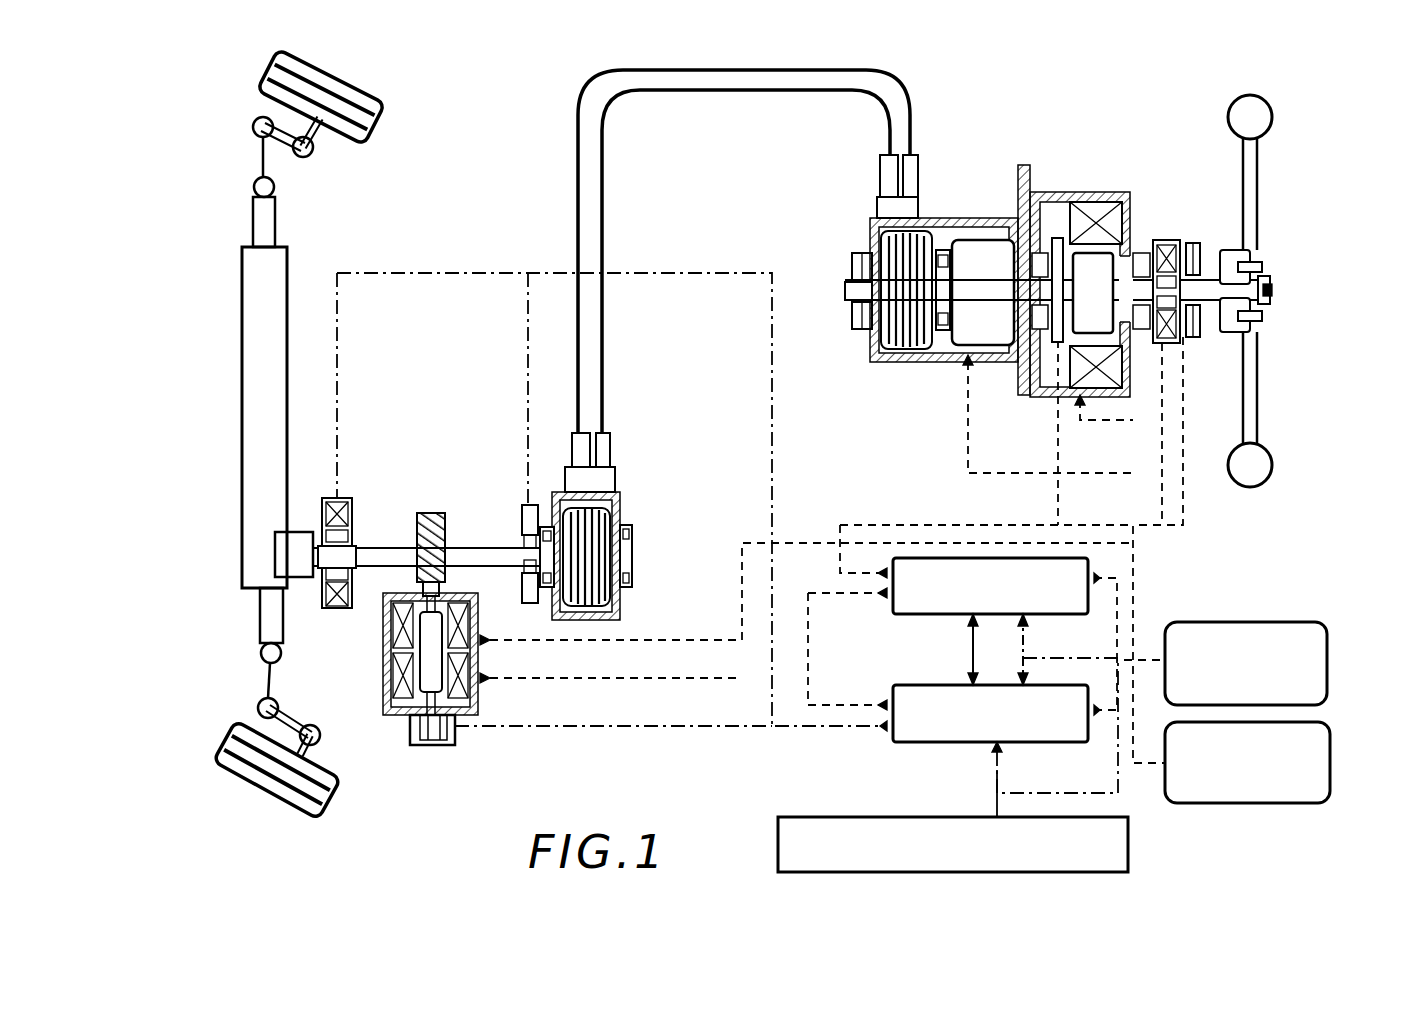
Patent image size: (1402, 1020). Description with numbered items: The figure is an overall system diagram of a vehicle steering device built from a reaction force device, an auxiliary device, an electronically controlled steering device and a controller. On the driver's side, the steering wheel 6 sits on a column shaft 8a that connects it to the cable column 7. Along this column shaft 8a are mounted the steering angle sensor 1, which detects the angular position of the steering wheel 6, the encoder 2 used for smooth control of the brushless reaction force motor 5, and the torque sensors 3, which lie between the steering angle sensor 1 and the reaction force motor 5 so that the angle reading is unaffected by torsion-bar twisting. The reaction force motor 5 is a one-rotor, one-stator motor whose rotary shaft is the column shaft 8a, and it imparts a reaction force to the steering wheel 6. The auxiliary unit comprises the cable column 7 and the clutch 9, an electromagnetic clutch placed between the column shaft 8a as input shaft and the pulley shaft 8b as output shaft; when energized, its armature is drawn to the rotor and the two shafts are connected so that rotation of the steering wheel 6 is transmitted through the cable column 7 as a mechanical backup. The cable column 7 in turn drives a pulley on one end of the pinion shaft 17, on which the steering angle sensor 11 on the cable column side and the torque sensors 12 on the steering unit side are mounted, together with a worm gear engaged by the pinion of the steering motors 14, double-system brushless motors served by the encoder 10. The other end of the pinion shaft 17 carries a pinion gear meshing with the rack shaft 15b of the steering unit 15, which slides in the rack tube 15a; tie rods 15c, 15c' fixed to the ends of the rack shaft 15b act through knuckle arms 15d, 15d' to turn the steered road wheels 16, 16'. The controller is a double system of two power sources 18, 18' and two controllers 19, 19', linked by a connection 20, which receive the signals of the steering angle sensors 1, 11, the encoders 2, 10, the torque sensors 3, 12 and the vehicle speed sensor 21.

The steering angle sensor 1 is at (1238, 250).
The encoder 2 is at (1053, 262).
The torque sensors 3 is at (1162, 240).
The reaction force motor 5 is at (1065, 193).
The steering wheel 6 is at (1258, 170).
The cable column 7 is at (877, 210).
The column shaft 8a is at (1208, 305).
The pulley shaft 8b is at (850, 291).
The clutch 9 is at (962, 323).
The encoder 10 is at (453, 738).
The steering angle sensor 11 is at (522, 520).
The torque sensors 12 is at (357, 490).
The steering motors 14 is at (480, 700).
The steering unit 15 is at (301, 423).
The rack tube 15a is at (242, 330).
The rack shaft 15b is at (277, 222).
The tie rod 15c is at (221, 133).
The knuckle arm 15d is at (352, 146).
The tie rod 15c' is at (220, 665).
The knuckle arm 15d' is at (315, 704).
The steered road wheel 16 is at (349, 94).
The steered road wheel 16' is at (277, 792).
The pinion shaft 17 is at (383, 547).
The power source 18 is at (1274, 631).
The power source 18' is at (1283, 735).
The controller 19 is at (970, 620).
The controller 19' is at (955, 742).
The communication line 20 is at (968, 652).
The vehicle speed sensor 21 is at (1128, 852).